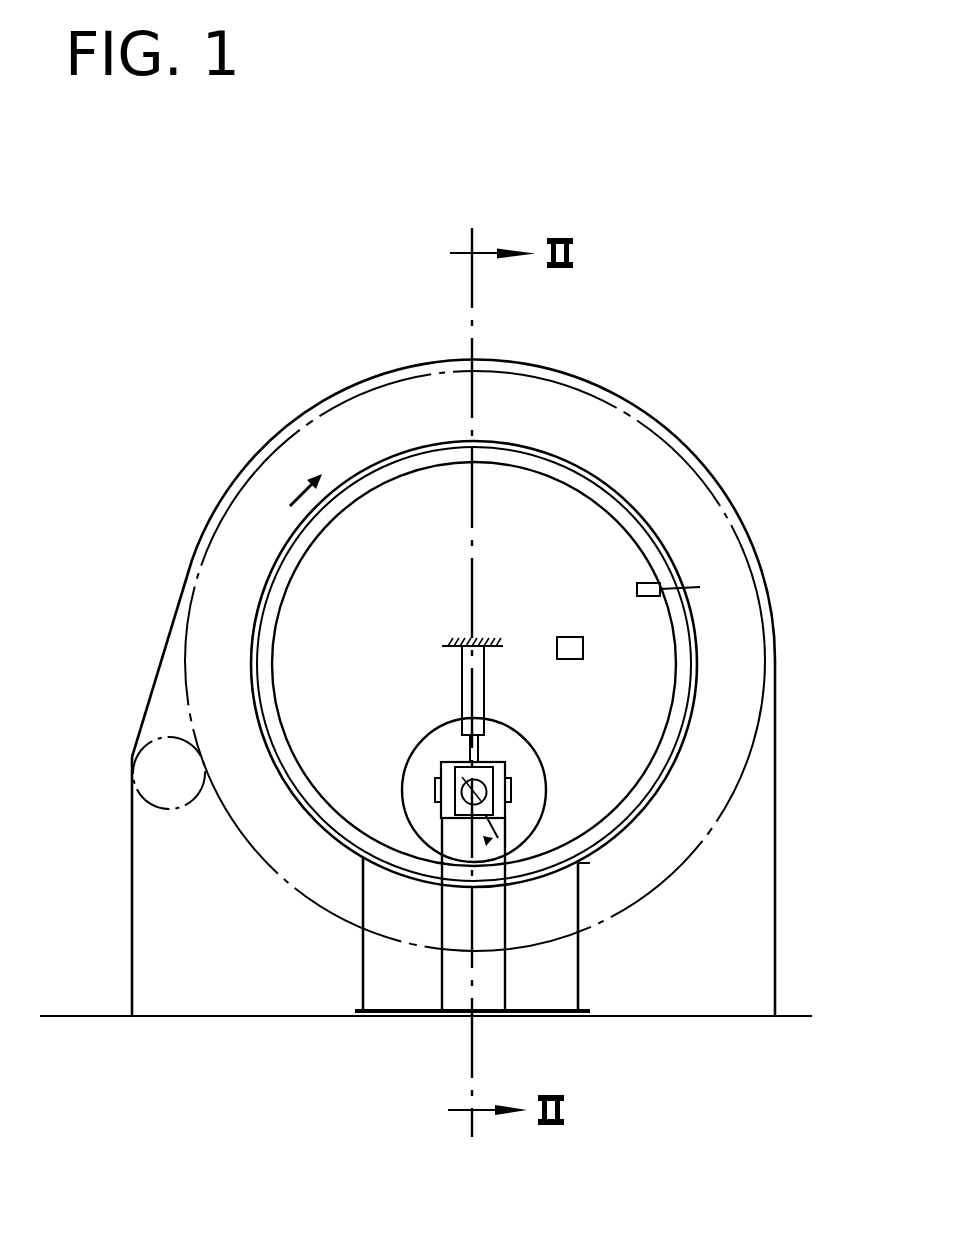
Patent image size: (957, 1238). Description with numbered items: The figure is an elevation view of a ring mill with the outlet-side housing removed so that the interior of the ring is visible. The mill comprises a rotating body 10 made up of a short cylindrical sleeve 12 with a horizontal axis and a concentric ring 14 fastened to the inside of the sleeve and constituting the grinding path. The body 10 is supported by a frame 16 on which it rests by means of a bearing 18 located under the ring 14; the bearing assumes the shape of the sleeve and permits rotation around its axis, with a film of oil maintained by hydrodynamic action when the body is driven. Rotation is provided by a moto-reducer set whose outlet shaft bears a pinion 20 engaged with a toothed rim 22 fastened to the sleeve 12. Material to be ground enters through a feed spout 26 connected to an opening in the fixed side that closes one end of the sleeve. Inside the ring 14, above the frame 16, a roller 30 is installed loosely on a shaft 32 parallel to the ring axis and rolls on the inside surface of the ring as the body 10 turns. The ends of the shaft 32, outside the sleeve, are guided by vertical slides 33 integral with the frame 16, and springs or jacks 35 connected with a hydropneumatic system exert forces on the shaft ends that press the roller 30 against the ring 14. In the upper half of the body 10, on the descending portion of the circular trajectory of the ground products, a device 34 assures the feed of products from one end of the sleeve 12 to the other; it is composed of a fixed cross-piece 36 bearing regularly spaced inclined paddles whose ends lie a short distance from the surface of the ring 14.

The rotating body 10 is at (623, 497).
The cylindrical sleeve 12 is at (640, 513).
The concentric ring 14 is at (653, 560).
The frame 16 is at (580, 970).
The bearing 18 is at (585, 863).
The pinion 20 is at (132, 757).
The toothed rim 22 is at (188, 650).
The feed spout 26 is at (572, 660).
The roller 30 is at (407, 760).
The shaft 32 is at (462, 797).
The vertical slides 33 is at (457, 988).
The feed device 34 is at (700, 587).
The springs or jacks 35 is at (468, 687).
The fixed cross-piece 36 is at (628, 589).